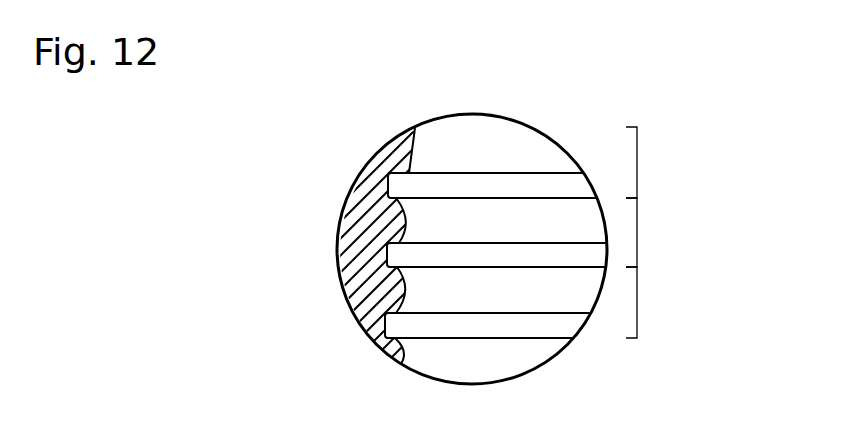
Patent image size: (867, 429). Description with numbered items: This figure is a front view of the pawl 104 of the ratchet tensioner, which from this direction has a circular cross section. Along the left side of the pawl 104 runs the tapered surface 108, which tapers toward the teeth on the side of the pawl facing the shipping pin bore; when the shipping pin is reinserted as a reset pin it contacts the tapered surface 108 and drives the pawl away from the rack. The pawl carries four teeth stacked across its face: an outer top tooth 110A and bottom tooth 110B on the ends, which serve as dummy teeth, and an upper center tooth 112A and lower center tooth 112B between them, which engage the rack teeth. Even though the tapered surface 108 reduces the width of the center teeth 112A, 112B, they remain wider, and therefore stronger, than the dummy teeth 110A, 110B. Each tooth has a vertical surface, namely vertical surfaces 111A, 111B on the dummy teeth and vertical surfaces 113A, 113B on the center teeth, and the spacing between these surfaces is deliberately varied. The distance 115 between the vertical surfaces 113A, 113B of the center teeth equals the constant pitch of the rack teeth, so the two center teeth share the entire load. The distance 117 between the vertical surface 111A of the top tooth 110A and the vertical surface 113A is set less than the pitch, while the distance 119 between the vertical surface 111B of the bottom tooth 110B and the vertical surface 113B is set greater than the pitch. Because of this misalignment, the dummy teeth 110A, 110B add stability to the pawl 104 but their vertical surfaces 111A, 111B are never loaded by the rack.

The pawl 104 is at (327, 145).
The tapered surface 108 is at (366, 244).
The top tooth 110A is at (528, 164).
The bottom tooth 110B is at (503, 368).
The vertical surface 111A is at (502, 116).
The vertical surface 111B is at (525, 338).
The upper center tooth 112A is at (537, 232).
The lower center tooth 112B is at (550, 304).
The vertical surface 113A is at (438, 198).
The vertical surface 113B is at (468, 268).
The distance 115 is at (667, 232).
The distance 117 is at (665, 162).
The distance 119 is at (665, 302).